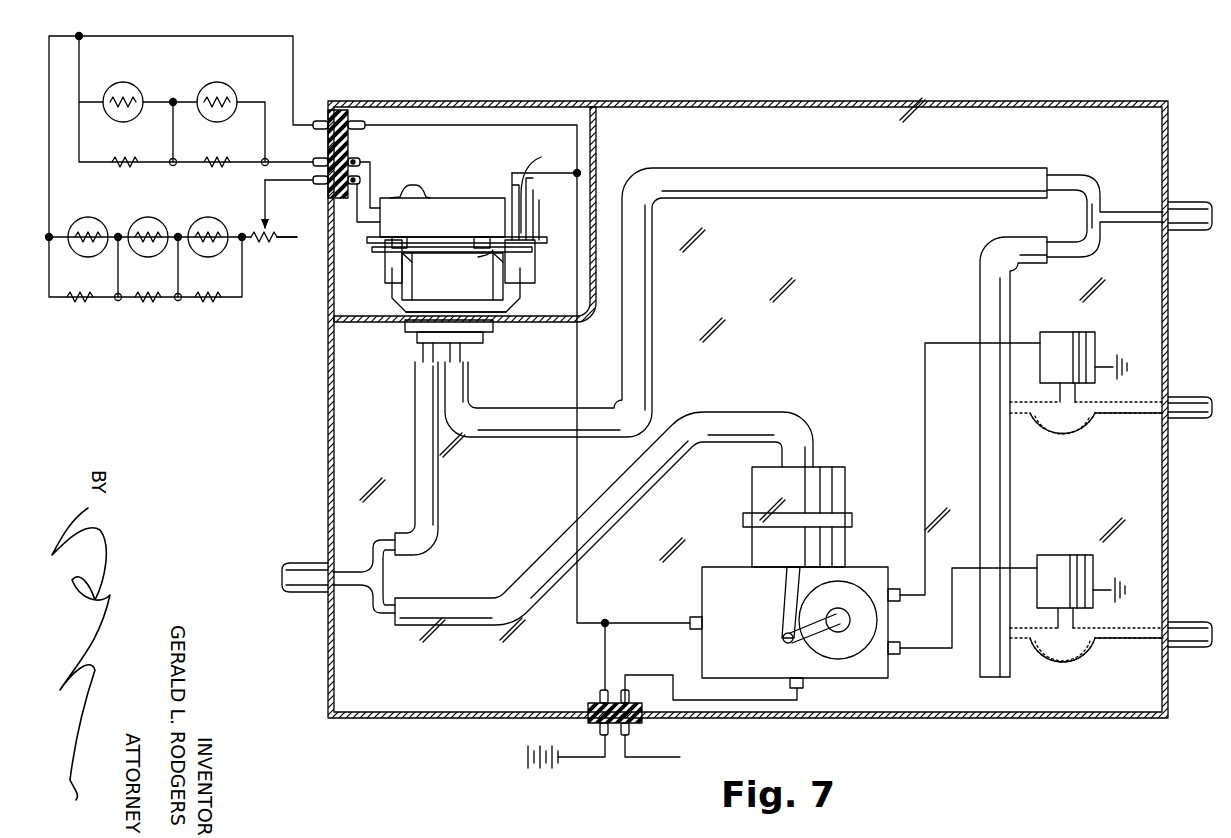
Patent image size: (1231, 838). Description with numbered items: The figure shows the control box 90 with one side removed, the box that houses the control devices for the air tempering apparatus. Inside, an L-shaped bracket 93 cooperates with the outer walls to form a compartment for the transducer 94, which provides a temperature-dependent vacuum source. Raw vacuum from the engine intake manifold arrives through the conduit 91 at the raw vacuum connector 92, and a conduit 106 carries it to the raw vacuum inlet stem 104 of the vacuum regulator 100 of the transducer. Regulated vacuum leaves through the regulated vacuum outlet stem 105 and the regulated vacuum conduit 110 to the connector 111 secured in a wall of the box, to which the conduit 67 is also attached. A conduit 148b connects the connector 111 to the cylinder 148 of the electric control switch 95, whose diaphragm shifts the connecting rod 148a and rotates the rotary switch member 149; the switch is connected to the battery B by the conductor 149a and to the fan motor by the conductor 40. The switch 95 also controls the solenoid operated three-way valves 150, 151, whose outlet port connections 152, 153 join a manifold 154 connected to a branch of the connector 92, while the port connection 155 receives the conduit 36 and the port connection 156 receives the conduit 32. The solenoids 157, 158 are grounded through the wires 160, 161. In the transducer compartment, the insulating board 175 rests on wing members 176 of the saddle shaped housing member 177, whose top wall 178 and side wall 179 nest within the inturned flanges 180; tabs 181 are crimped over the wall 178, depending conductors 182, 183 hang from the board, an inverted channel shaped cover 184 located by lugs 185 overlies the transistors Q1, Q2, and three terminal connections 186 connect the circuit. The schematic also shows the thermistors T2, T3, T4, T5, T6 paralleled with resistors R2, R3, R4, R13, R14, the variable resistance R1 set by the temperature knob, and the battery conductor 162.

The control box 90 is at (690, 98).
The L-shaped bracket 93 is at (597, 157).
The conduit 91 is at (1190, 200).
The raw vacuum connector 92 is at (1138, 208).
The conduit 36 is at (1185, 395).
The conduit 32 is at (1185, 648).
The conduit 67 is at (303, 563).
The transducer 94 is at (457, 255).
The electric control switch 95 is at (795, 627).
The vacuum regulator 100 is at (405, 330).
The raw vacuum inlet stem 104 is at (460, 352).
The regulated vacuum outlet stem 105 is at (423, 352).
The conduit 106 is at (522, 408).
The regulated vacuum conduit 110 is at (415, 383).
The connector 111 is at (362, 562).
The cylinder 148 is at (828, 488).
The connecting rod 148a is at (778, 612).
The conduit 148b is at (740, 420).
The rotary switch member 149 is at (822, 628).
The conductor 149a is at (610, 643).
The solenoid operated three-way valve 150 is at (1065, 440).
The solenoid operated three-way valve 151 is at (1078, 666).
The outlet port connection 152 is at (1027, 415).
The outlet port connection 153 is at (1020, 641).
The manifold 154 is at (980, 463).
The port connection 155 is at (1122, 415).
The port connection 156 is at (1115, 641).
The solenoid 157 is at (1073, 332).
The solenoid 158 is at (1067, 567).
The wire 160 is at (921, 387).
The wire 161 is at (930, 652).
The conductor 162 is at (746, 320).
The insulating board 175 is at (445, 237).
The wing members 176 is at (545, 272).
The saddle shaped housing member 177 is at (490, 299).
The top wall 178 is at (490, 250).
The side wall 179 is at (505, 296).
The inturned flanges 180 is at (405, 290).
The tabs 181 is at (403, 257).
The depending conductor 182 is at (386, 272).
The depending conductor 183 is at (535, 282).
The inverted channel shaped cover 184 is at (463, 198).
The lugs 185 is at (400, 237).
The terminal connections 186 is at (545, 187).
The conductor 40 is at (700, 698).
The PNP transistor Q1 is at (411, 185).
The transistor Q2 is at (540, 222).
The thermistor T2 is at (89, 217).
The thermistor T3 is at (123, 82).
The thermistor T4 is at (217, 82).
The thermistor T5 is at (148, 217).
The thermistor T6 is at (208, 217).
The variable resistance R1 is at (268, 246).
The resistor R2 is at (80, 305).
The resistor R3 is at (148, 305).
The resistor R4 is at (209, 305).
The resistor R13 is at (125, 157).
The resistor R14 is at (217, 157).
The battery B is at (539, 771).